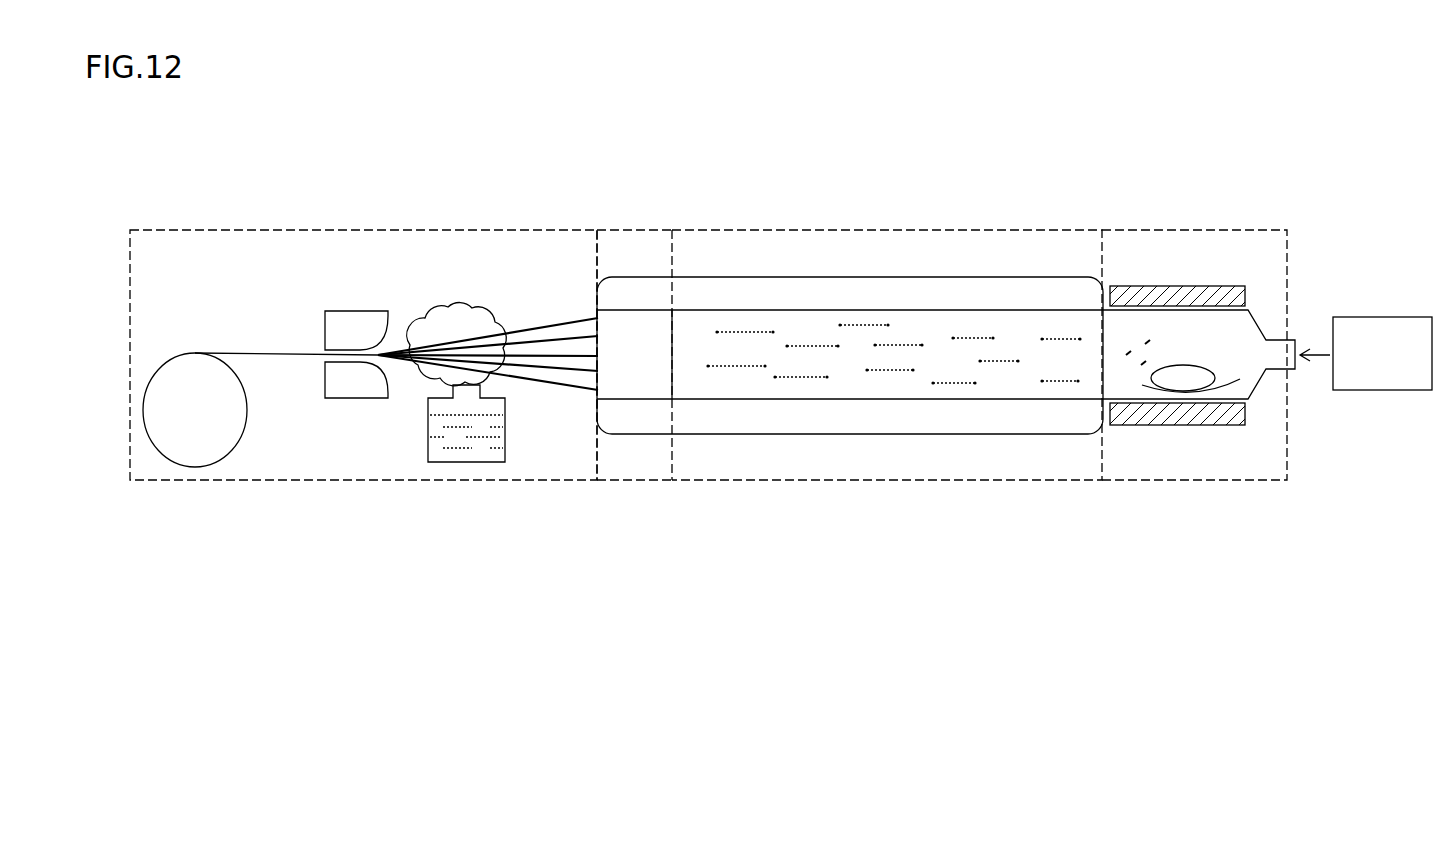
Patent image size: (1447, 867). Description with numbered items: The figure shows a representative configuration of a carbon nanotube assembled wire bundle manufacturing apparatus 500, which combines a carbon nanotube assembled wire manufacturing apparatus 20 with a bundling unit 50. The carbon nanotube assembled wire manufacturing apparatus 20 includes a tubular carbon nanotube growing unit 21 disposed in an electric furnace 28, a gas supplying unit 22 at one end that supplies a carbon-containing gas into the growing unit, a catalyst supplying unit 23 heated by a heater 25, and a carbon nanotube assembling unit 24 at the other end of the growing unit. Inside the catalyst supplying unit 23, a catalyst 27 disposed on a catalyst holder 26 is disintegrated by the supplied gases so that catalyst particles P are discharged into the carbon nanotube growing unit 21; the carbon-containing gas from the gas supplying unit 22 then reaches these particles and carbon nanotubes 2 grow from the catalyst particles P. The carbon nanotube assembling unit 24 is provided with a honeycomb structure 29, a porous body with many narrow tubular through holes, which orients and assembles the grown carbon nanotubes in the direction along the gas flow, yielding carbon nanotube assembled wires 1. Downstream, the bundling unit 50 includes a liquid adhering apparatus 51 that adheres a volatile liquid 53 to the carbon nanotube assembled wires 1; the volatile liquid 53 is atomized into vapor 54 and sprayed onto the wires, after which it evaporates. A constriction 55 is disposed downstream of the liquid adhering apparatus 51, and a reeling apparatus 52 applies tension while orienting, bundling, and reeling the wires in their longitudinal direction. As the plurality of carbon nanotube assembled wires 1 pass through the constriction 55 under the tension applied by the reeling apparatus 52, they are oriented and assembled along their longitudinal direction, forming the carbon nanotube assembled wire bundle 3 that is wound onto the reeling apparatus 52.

The carbon nanotube assembled wire bundle manufacturing apparatus 500 is at (1364, 198).
The bundling unit 50 is at (596, 224).
The carbon nanotube assembling unit 24 is at (671, 224).
The carbon nanotube growing unit 21 is at (1101, 224).
The electric furnace 28 is at (1025, 277).
The catalyst supplying unit 23 is at (1104, 224).
The heater 25 is at (1228, 288).
The gas supplying unit 22 is at (1383, 317).
The carbon nanotube assembled wire manufacturing apparatus 20 is at (1287, 486).
The honeycomb structure 29 is at (641, 380).
The carbon nanotube assembled wire bundle 3 is at (243, 352).
The constriction 55 is at (356, 311).
The carbon nanotube assembled wire 1 is at (533, 382).
The vapor 54 is at (485, 305).
The volatile liquid 53 is at (507, 438).
The reeling apparatus 52 is at (193, 468).
The liquid adhering apparatus 51 is at (468, 465).
The carbon nanotubes 2 is at (1058, 384).
The catalyst particles P is at (1130, 357).
The catalyst 27 is at (1200, 378).
The catalyst holder 26 is at (1238, 381).